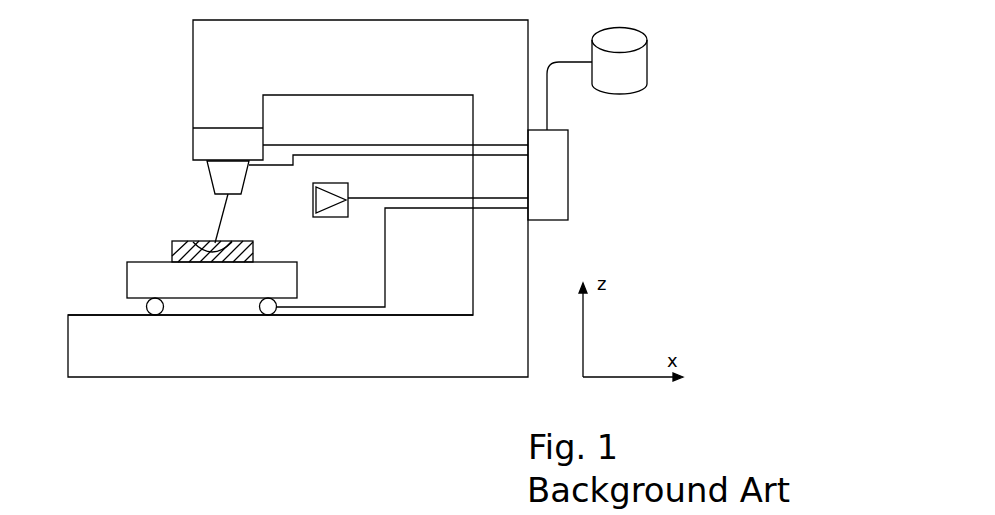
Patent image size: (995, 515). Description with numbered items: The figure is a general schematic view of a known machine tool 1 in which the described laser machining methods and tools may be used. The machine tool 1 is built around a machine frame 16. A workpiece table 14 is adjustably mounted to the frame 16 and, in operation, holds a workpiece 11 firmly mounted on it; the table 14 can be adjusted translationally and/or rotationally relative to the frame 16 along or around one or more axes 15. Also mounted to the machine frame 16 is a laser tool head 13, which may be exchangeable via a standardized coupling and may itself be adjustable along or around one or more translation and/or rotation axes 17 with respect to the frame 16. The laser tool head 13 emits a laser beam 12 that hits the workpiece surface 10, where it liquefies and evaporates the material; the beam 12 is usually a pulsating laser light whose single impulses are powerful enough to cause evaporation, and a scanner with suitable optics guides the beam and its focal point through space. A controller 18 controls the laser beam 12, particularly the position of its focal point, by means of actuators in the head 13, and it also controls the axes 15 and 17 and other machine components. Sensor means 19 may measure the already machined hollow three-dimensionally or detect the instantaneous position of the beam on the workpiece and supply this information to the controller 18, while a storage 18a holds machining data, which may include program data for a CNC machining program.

The machine tool 1 is at (120, 88).
The workpiece surface 10 is at (222, 241).
The workpiece 11 is at (170, 252).
The laser beam 12 is at (218, 223).
The laser tool head 13 is at (242, 174).
The workpiece table 14 is at (132, 278).
The axes 15 is at (143, 308).
The machine frame 16 is at (72, 342).
The axes 17 is at (200, 145).
The controller 18 is at (560, 183).
The storage 18a is at (622, 88).
The sensor means 19 is at (343, 214).